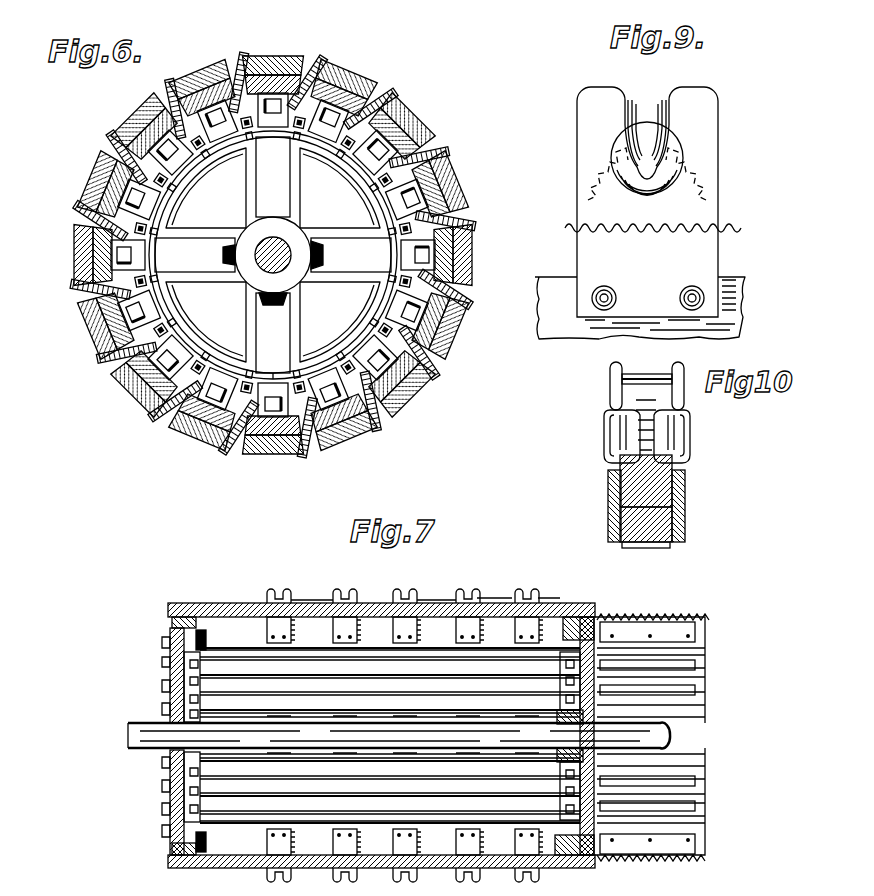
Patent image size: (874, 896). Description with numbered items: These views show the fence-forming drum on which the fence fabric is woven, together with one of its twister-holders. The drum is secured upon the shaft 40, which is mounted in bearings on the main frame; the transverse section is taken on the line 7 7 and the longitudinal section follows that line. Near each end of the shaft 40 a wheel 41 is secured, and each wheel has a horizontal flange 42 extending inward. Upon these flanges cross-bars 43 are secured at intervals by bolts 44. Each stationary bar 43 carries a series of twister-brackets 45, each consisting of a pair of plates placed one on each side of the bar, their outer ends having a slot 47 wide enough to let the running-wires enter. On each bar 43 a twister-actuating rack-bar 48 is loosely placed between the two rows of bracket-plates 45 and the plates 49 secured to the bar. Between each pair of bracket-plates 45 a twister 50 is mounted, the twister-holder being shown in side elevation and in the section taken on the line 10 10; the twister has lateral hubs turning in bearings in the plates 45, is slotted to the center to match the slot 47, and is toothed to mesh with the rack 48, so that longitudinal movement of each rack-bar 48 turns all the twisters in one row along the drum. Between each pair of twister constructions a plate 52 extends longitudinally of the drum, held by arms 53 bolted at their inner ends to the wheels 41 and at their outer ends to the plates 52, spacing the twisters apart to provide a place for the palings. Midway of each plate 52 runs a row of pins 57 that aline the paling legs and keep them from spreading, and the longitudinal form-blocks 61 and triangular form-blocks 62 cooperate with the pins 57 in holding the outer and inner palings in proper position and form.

In FIG. 6, the section line 7 7 is at (279, 258).
In FIG. 9, the section line 10 10 is at (646, 180).
In FIG. 6, the shaft 40 is at (289, 249).
In FIG. 7, the shaft 40 is at (655, 734).
In FIG. 6, the wheel 41 is at (273, 255).
In FIG. 7, the wheel 41 is at (168, 780).
In FIG. 6, the horizontal flange 42 is at (273, 255).
In FIG. 7, the horizontal flange 42 is at (200, 650).
In FIG. 6, the cross-bar 43 is at (283, 243).
In FIG. 9, the cross-bar 43 is at (640, 308).
In FIG. 7, the cross-bar 43 is at (258, 638).
In FIG. 6, the bolt 44 is at (295, 349).
In FIG. 7, the bolt 44 is at (168, 688).
In FIG. 6, the twister-bracket 45 is at (445, 377).
In FIG. 9, the twister-bracket 45 is at (595, 253).
In FIG. 10, the twister-bracket 45 is at (611, 392).
In FIG. 7, the twister-bracket 45 is at (415, 598).
In FIG. 9, the slot 47 is at (663, 95).
In FIG. 6, the twister-actuating rack-bar 48 is at (455, 334).
In FIG. 9, the twister-actuating rack-bar 48 is at (732, 224).
In FIG. 10, the twister-actuating rack-bar 48 is at (655, 545).
In FIG. 7, the twister-actuating rack-bar 48 is at (666, 616).
In FIG. 7, the plate 49 is at (682, 630).
In FIG. 6, the twister 50 is at (253, 255).
In FIG. 9, the twister 50 is at (718, 148).
In FIG. 10, the twister 50 is at (628, 402).
In FIG. 6, the plate 52 is at (158, 226).
In FIG. 7, the plate 52 is at (580, 606).
In FIG. 6, the arm 53 is at (220, 92).
In FIG. 7, the arm 53 is at (170, 636).
In FIG. 6, the pin 57 is at (332, 305).
In FIG. 7, the longitudinal form-block 61 is at (308, 600).
In FIG. 6, the triangular form-block 62 is at (412, 422).
In FIG. 7, the triangular form-block 62 is at (492, 601).